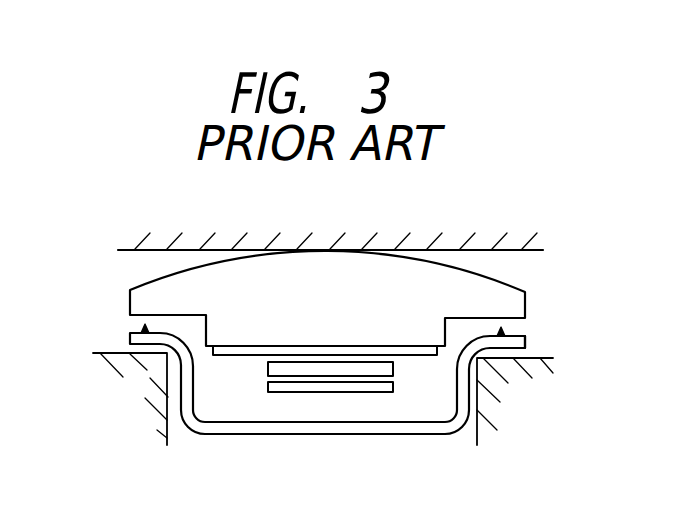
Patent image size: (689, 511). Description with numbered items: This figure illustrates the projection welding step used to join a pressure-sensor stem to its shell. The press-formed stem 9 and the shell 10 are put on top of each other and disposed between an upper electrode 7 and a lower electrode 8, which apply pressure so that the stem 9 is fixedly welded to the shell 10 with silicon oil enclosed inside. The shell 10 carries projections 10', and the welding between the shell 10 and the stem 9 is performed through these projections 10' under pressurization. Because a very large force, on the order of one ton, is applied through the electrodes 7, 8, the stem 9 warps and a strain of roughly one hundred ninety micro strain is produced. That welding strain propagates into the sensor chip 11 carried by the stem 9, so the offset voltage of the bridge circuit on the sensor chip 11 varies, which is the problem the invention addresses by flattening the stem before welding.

The upper electrode 7 is at (148, 251).
The lower electrode 8 is at (157, 432).
The stem 9 is at (131, 301).
The shell 10 is at (287, 375).
The projections 10' is at (538, 326).
The sensor chip 11 is at (285, 392).